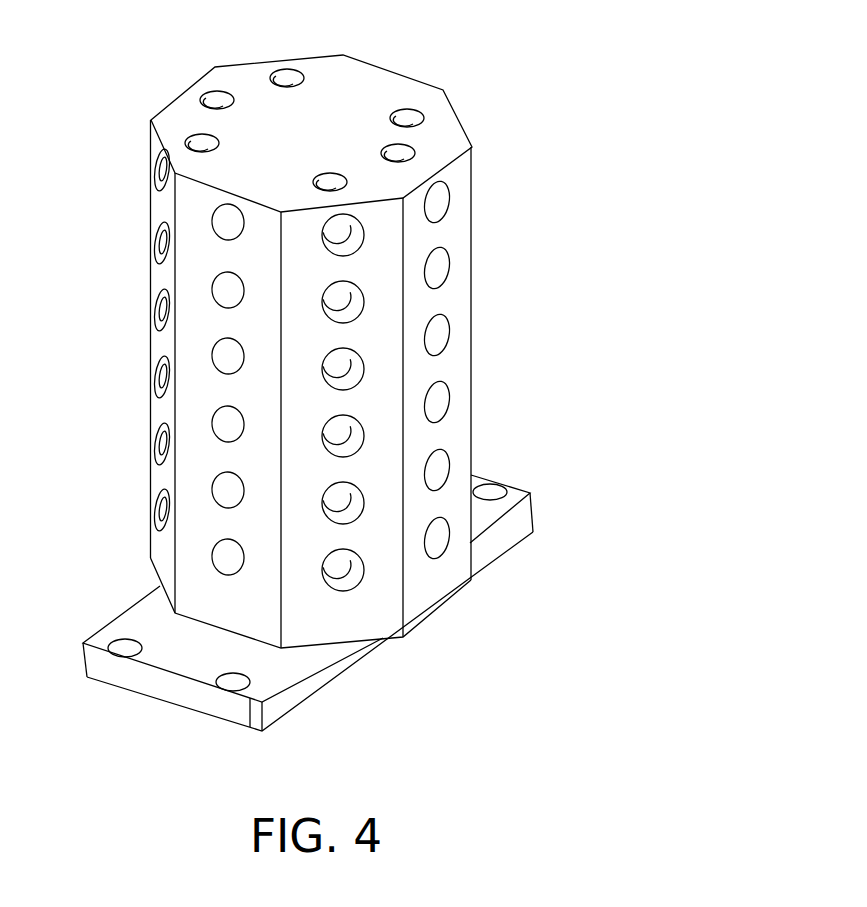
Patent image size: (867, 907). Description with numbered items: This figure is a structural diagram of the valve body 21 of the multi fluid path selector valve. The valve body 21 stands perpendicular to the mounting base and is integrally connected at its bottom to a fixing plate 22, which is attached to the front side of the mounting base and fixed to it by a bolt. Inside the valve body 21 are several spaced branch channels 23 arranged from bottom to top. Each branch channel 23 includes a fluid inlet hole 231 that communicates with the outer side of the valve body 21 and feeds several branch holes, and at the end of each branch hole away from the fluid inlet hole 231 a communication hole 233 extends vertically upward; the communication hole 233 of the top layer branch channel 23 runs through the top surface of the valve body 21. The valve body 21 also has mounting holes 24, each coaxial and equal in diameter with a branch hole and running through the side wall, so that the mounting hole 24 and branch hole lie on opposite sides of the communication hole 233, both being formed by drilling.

The valve body 21 is at (294, 324).
The fixing plate 22 is at (312, 685).
The branch channel 23 is at (140, 374).
The fluid inlet hole 231 is at (220, 222).
The communication hole 233 is at (424, 117).
The mounting hole 24 is at (438, 200).